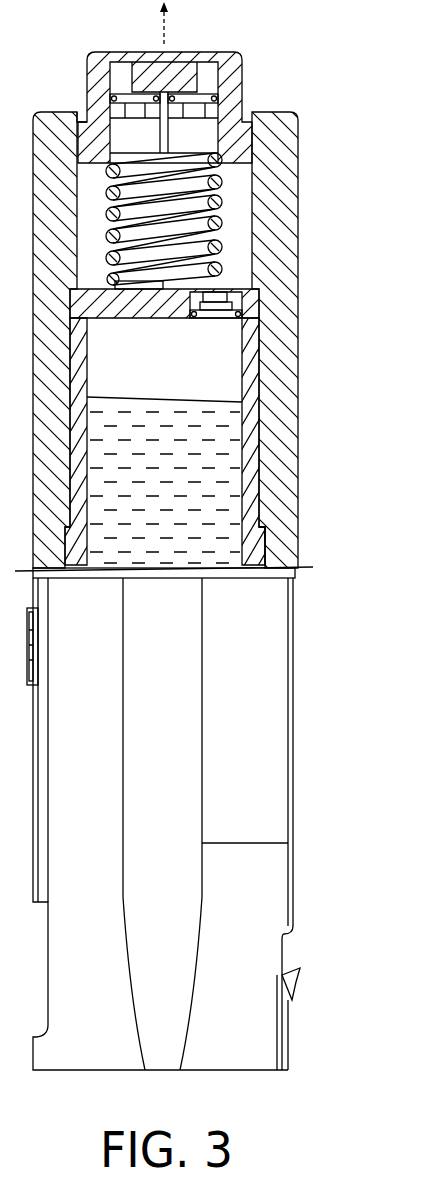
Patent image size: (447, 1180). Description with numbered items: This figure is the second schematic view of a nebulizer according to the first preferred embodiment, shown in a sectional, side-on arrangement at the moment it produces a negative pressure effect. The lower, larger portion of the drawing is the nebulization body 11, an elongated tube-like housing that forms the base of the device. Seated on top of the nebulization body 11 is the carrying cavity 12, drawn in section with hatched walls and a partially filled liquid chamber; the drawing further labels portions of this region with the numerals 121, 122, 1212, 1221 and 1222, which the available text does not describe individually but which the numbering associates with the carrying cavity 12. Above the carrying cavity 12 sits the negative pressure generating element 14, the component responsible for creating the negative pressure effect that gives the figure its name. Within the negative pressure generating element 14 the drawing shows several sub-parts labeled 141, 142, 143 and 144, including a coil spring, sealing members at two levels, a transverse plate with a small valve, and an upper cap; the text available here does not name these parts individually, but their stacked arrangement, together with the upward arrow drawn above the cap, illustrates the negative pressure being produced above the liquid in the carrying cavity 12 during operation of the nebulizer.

The nebulization body 11 is at (309, 734).
The carrying cavity 12 is at (368, 352).
The container wall 121 is at (252, 372).
The outer housing 122 is at (277, 436).
The container step 1212 is at (263, 533).
The housing top notch 1221 is at (83, 115).
The housing bottom step 1222 is at (272, 548).
The negative pressure generating element 14 is at (368, 53).
The spring 141 is at (222, 224).
The seal ring 142 is at (195, 101).
The valve plate 143 is at (213, 289).
The cap 144 is at (233, 70).